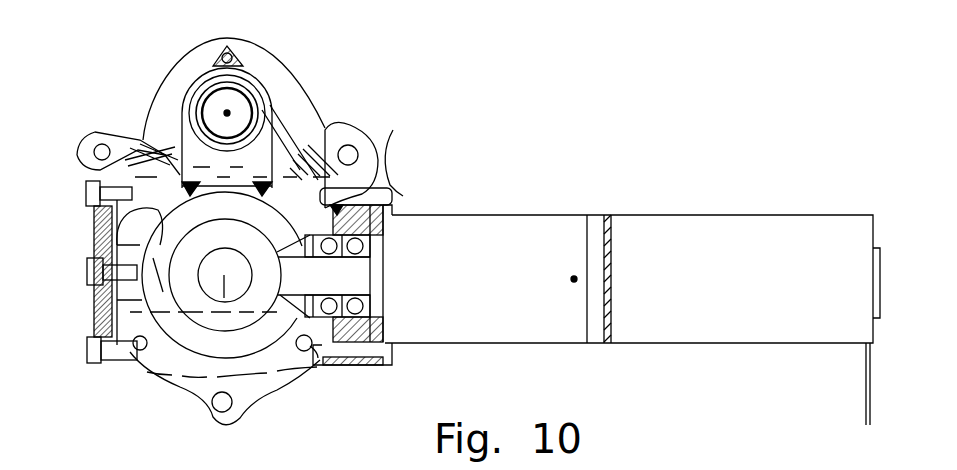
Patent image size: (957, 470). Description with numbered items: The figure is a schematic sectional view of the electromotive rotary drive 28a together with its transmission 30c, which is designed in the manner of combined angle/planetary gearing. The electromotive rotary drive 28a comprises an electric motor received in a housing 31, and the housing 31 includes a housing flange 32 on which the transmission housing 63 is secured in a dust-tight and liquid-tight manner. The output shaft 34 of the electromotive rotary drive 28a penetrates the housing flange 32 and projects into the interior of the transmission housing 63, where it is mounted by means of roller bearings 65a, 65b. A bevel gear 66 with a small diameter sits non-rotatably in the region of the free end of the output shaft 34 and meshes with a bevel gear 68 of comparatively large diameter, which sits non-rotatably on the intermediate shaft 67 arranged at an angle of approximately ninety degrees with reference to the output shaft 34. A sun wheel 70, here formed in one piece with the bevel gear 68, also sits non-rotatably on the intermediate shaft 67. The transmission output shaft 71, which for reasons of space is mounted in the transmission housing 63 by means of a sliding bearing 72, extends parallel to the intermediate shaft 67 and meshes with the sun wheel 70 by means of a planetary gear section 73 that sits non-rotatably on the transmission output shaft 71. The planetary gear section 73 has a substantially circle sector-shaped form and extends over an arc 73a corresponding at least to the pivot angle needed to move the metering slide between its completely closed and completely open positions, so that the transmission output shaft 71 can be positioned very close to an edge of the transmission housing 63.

The electromotive rotary drive 28a is at (617, 200).
The transmission 30c is at (341, 93).
The housing 31 is at (701, 214).
The housing flange 32 is at (390, 197).
The output shaft 34 is at (352, 272).
The transmission housing 63 is at (296, 70).
The roller bearing 65a is at (385, 165).
The roller bearing 65b is at (392, 172).
The bevel gear 66 is at (323, 130).
The intermediate shaft 67 is at (223, 300).
The bevel gear 68 is at (112, 358).
The sun wheel 70 is at (93, 250).
The transmission output shaft 71 is at (187, 137).
The sliding bearing 72 is at (183, 150).
The planetary gear section 73 is at (82, 159).
The arc 73a is at (90, 258).